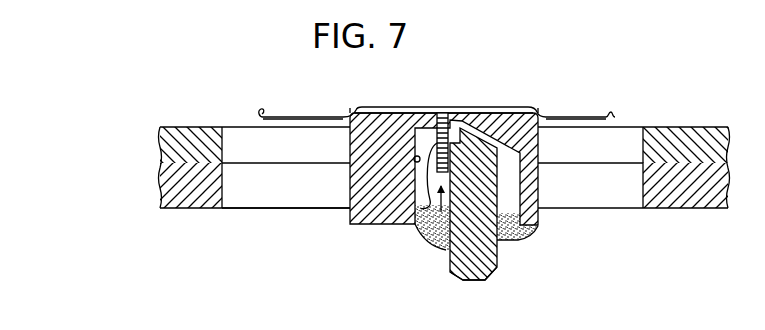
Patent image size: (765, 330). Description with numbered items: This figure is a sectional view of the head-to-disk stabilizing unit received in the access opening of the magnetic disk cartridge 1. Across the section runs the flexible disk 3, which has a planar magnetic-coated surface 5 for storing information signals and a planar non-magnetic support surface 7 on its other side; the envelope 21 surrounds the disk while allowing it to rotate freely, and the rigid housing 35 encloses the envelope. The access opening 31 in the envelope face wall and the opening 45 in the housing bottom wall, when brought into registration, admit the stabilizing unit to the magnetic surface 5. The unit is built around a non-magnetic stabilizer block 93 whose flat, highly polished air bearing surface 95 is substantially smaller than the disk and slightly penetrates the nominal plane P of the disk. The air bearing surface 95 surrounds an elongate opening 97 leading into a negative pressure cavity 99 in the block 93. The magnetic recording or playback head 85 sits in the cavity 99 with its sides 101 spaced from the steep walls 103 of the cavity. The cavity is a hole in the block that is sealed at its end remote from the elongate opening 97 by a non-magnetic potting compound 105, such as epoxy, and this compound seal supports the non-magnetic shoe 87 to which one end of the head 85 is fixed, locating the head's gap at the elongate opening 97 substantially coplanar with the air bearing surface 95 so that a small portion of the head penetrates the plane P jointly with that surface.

The magnetic disk cartridge 1 is at (106, 182).
The envelope 21 is at (157, 136).
The housing 35 is at (158, 192).
The access opening 31 is at (243, 157).
The opening 45 is at (280, 203).
The magnetic-coated surface 5 is at (263, 116).
The non-magnetic support surface 7 is at (290, 114).
The flexible disk 3 is at (304, 108).
The nominal plane of the disk P is at (352, 106).
The air bearing surface 95 is at (364, 103).
The stabilizer block 93 is at (409, 103).
The elongate opening 97 is at (436, 113).
The negative pressure cavity 99 is at (452, 137).
The sides of the magnetic head 101 is at (424, 190).
The steep walls of the cavity 103 is at (413, 161).
The magnetic recording or playback head 85 is at (446, 250).
The non-magnetic potting compound 105 is at (443, 262).
The non-magnetic shoe 87 is at (449, 272).